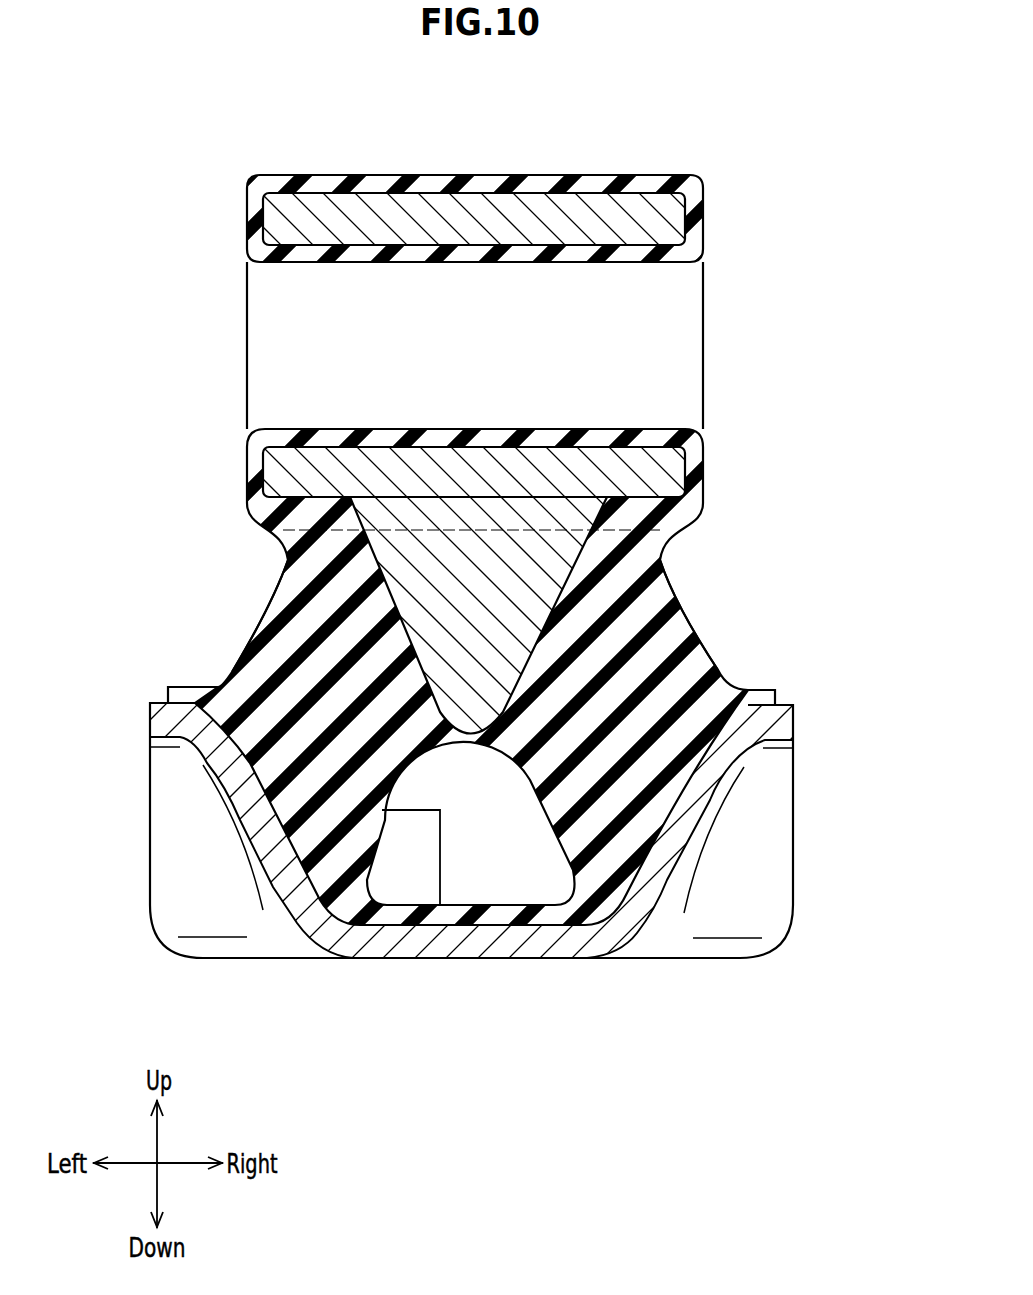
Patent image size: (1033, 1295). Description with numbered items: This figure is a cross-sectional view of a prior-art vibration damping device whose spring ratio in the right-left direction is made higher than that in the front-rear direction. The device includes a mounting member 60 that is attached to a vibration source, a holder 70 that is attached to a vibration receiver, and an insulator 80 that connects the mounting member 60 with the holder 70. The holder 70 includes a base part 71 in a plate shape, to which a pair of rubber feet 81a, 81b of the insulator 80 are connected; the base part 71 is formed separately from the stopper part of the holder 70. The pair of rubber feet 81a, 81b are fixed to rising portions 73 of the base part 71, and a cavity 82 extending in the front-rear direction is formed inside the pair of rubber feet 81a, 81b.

The mounting member 60 is at (592, 190).
The insulator 80 is at (680, 606).
The rubber foot 81a is at (247, 668).
The rubber foot 81b is at (701, 638).
The cavity 82 is at (506, 881).
The base part 71 is at (653, 947).
The holder 70 is at (471, 875).
The rising portion 73 is at (247, 820).